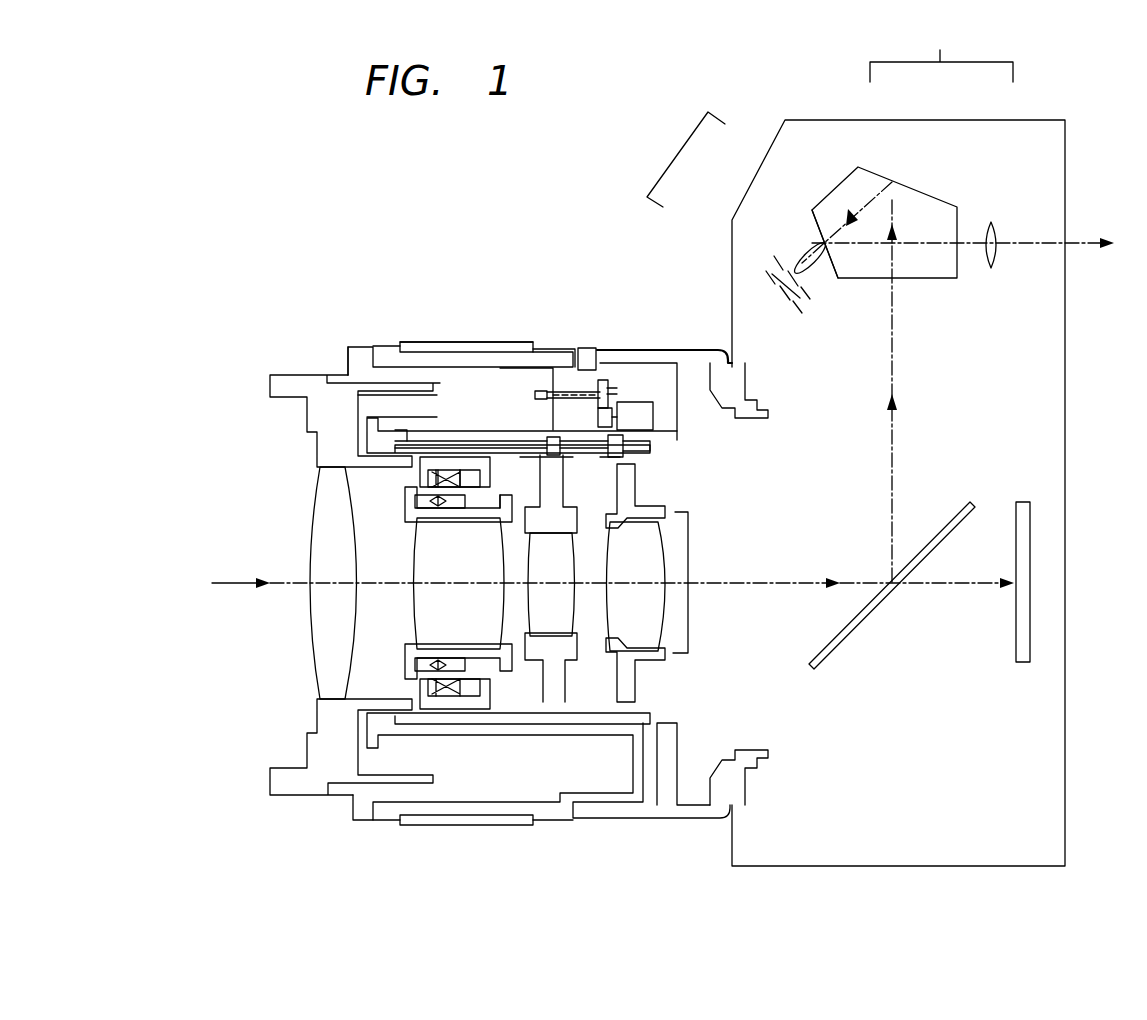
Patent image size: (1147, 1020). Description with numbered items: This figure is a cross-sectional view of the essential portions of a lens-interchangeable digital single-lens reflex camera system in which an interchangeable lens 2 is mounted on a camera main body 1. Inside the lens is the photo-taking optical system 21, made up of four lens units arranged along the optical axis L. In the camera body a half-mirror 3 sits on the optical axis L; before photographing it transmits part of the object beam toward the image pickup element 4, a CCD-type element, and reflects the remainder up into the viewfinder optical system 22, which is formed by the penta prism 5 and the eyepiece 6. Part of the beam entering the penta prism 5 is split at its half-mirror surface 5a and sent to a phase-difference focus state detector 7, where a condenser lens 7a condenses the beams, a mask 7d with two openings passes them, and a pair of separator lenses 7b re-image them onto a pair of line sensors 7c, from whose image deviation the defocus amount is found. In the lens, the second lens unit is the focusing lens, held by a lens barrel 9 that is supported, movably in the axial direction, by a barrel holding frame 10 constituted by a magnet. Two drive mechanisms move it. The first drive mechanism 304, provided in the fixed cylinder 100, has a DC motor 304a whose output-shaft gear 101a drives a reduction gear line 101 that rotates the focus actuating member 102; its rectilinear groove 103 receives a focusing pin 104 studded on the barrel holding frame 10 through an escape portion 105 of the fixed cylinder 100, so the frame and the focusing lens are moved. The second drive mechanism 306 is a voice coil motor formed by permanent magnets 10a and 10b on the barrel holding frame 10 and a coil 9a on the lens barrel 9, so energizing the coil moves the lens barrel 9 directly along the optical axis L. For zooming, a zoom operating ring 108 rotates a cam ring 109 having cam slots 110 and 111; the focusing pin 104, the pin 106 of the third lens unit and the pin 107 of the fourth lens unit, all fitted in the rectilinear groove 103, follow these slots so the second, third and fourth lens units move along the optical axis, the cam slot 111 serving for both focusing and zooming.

The camera main body 1 is at (1045, 822).
The interchangeable lens 2 is at (267, 615).
The half-mirror 3 is at (971, 500).
The image pickup element 4 is at (1032, 617).
The penta prism 5 is at (868, 180).
The half-mirror surface 5a is at (808, 235).
The eyepiece 6 is at (985, 215).
The focus state detector 7 is at (678, 154).
The condenser lens 7a is at (800, 242).
The separator lenses 7b is at (776, 259).
The line sensors 7c is at (768, 282).
The mask 7d is at (806, 292).
The lens barrel 9 is at (408, 499).
The coil 9a is at (452, 468).
The barrel holding frame 10 is at (487, 497).
The permanent magnet 10a is at (427, 462).
The permanent magnet 10b is at (355, 347).
The photo-taking optical system 21 is at (690, 553).
The viewfinder optical system 22 is at (941, 52).
The fixed cylinder 100 is at (670, 350).
The reduction gear line 101 is at (562, 392).
The gear 101a is at (545, 390).
The focus actuating member 102 is at (528, 420).
The rectilinear groove 103 is at (470, 441).
The focusing pin 104 is at (440, 462).
The escape portion 105 is at (424, 468).
The pin 106 is at (553, 457).
The pin 107 is at (626, 440).
The zoom operating ring 108 is at (555, 815).
The cam ring 109 is at (624, 448).
The cam slot 110 is at (605, 457).
The cam slot 111 is at (495, 462).
The first drive mechanism 304 is at (662, 366).
The DC motor 304a is at (641, 392).
The second drive mechanism 306 is at (505, 490).
The optical axis L is at (763, 588).